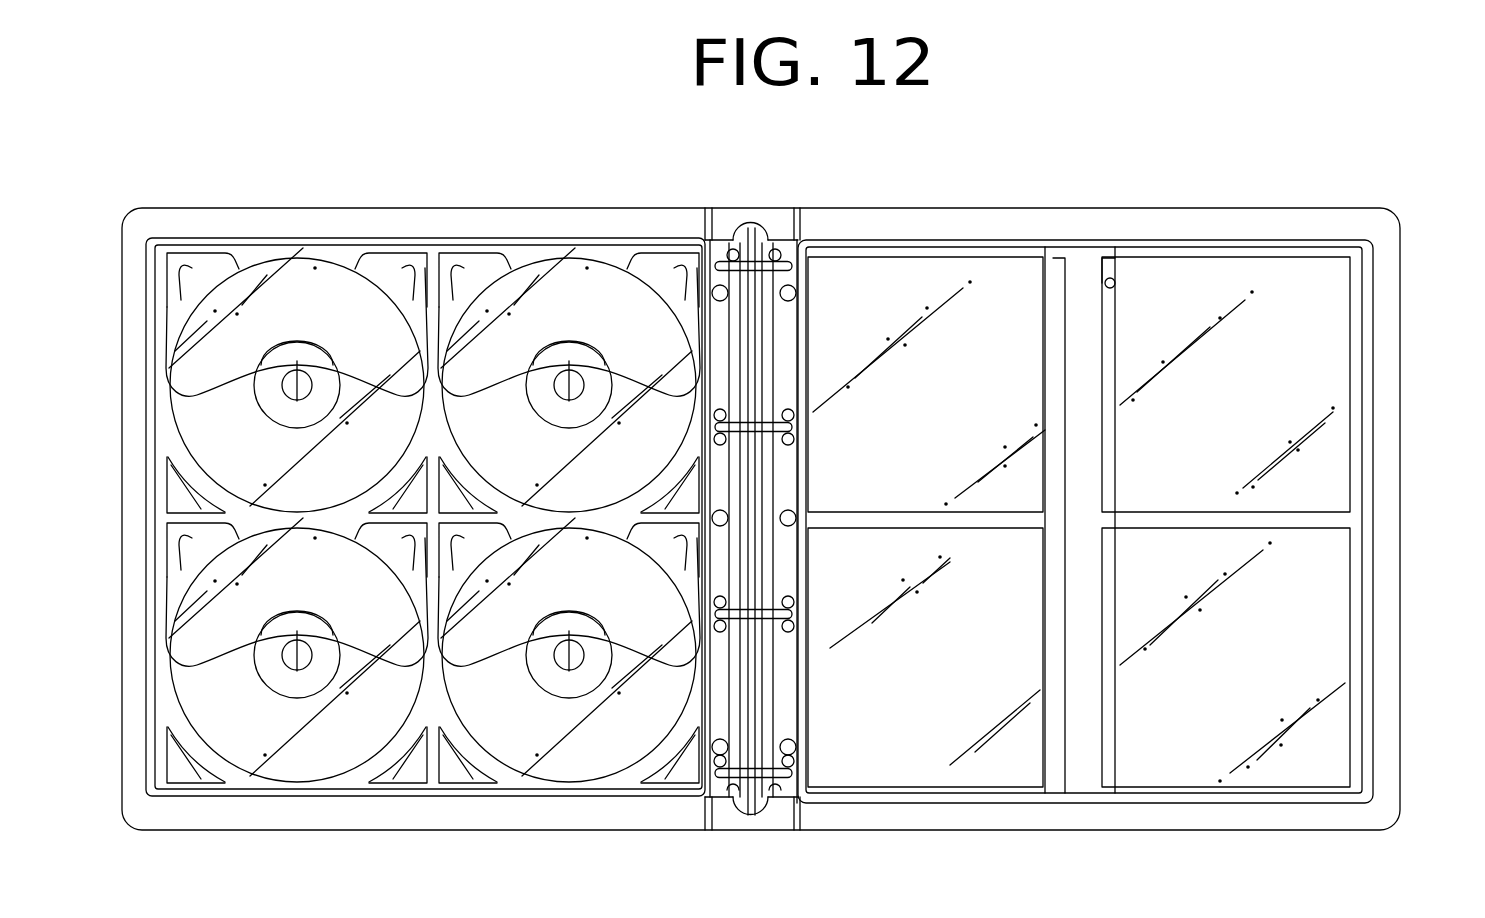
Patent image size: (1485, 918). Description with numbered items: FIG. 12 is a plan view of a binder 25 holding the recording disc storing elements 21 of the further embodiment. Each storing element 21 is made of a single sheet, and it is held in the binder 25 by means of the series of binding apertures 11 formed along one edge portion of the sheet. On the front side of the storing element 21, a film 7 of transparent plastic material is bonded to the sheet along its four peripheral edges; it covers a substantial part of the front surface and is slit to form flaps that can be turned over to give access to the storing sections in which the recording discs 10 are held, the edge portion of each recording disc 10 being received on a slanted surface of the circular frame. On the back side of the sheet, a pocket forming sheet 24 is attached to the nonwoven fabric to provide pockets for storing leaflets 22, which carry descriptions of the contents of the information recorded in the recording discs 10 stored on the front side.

The film 7 is at (270, 740).
The recording disc 10 is at (577, 283).
The apertures 11 is at (798, 612).
The recording disc storing element 21 is at (428, 226).
The leaflets 22 is at (1108, 353).
The pocket forming sheet 24 is at (1113, 279).
The binder 25 is at (1056, 198).